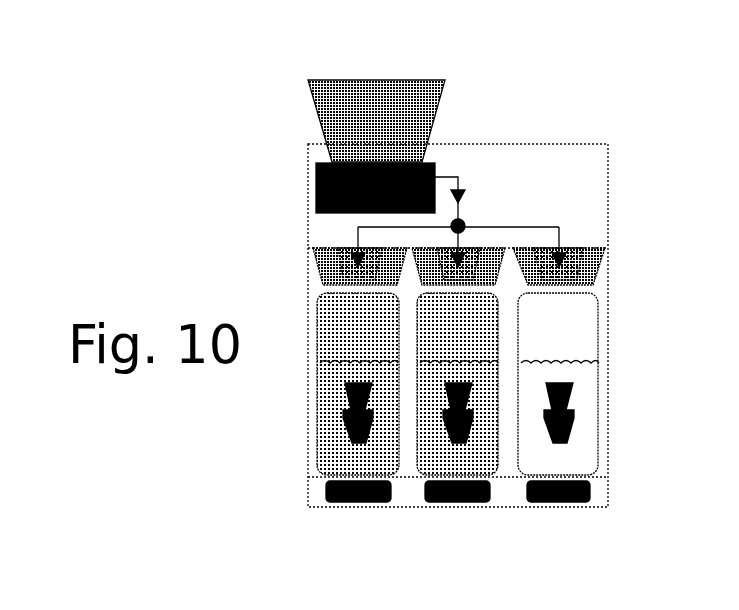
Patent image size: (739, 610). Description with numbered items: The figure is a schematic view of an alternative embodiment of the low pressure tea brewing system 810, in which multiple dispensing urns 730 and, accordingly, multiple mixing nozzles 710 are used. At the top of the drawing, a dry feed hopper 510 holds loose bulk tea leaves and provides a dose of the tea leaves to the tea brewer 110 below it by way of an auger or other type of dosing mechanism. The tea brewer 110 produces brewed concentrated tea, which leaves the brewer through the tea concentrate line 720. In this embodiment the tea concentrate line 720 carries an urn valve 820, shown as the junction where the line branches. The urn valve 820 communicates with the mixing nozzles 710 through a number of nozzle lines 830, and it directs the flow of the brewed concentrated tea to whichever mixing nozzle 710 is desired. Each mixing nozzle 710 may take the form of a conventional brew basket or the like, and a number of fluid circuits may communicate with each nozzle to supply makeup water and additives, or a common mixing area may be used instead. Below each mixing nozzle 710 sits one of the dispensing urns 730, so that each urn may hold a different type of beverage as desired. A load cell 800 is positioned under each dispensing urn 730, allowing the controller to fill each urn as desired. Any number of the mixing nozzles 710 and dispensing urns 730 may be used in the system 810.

The low pressure tea brewing system 810 is at (303, 60).
The dry feed hopper 510 is at (435, 112).
The tea brewer 110 is at (345, 200).
The tea concentrate line 720 is at (460, 177).
The urn valve 820 is at (465, 225).
The nozzle lines 830 is at (453, 229).
The mixing nozzles 710 is at (490, 248).
The dispensing urns 730 is at (497, 292).
The load cell 800 is at (530, 502).